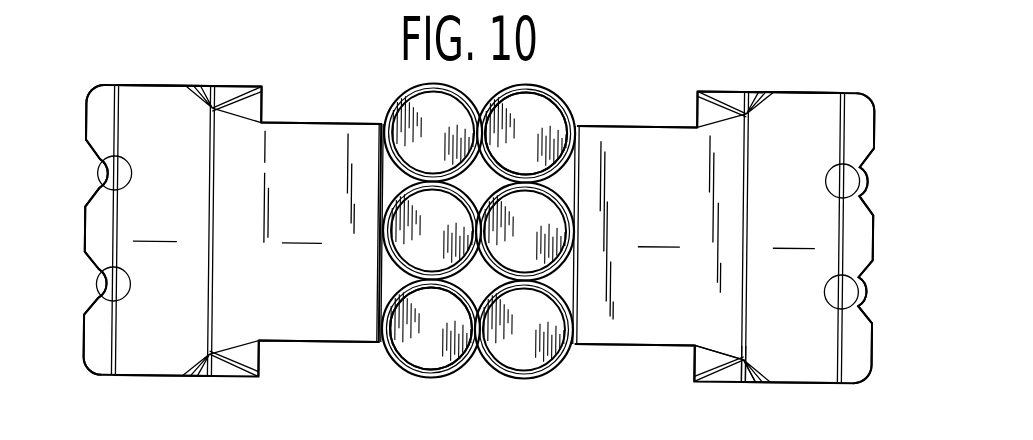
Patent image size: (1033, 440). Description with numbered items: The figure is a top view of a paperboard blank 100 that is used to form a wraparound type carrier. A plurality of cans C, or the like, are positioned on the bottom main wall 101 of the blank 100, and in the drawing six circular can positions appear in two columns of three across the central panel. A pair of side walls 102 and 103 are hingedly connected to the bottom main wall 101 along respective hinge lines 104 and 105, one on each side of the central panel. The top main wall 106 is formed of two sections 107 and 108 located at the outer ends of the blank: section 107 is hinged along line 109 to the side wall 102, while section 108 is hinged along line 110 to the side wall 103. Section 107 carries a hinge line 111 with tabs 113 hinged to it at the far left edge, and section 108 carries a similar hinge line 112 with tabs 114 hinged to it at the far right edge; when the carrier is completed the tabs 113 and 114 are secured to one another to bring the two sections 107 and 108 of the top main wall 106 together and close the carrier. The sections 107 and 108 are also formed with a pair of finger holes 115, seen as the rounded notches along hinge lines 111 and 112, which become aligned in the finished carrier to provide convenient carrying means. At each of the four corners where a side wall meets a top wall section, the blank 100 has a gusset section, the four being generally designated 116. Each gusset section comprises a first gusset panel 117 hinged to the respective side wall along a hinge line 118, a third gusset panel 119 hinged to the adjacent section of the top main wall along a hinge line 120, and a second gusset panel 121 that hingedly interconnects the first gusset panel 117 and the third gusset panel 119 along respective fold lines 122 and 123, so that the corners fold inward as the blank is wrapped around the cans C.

The paperboard blank 100 is at (605, 112).
The bottom main wall 101 is at (475, 353).
The side wall 102 is at (320, 232).
The side wall 103 is at (648, 236).
The hinge line 104 is at (377, 171).
The hinge line 105 is at (575, 296).
The top main wall 106 is at (134, 84).
The section of top main wall 107 is at (162, 230).
The section of top main wall 108 is at (792, 237).
The hinge line 109 is at (208, 308).
The hinge line 110 is at (748, 295).
The hinge line 111 is at (112, 104).
The hinge line 112 is at (847, 114).
The tabs 113 is at (102, 133).
The tabs 114 is at (853, 238).
The finger holes 115 is at (107, 289).
The gusset sections 116 is at (272, 85).
The first gusset panel 117 is at (253, 110).
The hinge line 118 is at (718, 345).
The third gusset panel 119 is at (197, 92).
The hinge line 120 is at (750, 357).
The second gusset panel 121 is at (233, 95).
The fold line 122 is at (696, 363).
The fold line 123 is at (745, 381).
The cans C is at (530, 124).